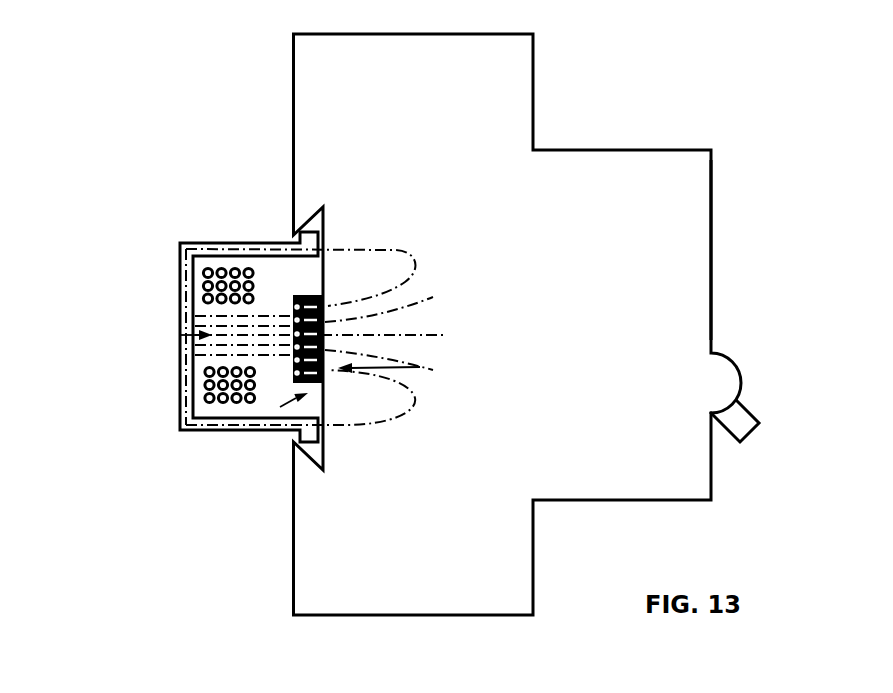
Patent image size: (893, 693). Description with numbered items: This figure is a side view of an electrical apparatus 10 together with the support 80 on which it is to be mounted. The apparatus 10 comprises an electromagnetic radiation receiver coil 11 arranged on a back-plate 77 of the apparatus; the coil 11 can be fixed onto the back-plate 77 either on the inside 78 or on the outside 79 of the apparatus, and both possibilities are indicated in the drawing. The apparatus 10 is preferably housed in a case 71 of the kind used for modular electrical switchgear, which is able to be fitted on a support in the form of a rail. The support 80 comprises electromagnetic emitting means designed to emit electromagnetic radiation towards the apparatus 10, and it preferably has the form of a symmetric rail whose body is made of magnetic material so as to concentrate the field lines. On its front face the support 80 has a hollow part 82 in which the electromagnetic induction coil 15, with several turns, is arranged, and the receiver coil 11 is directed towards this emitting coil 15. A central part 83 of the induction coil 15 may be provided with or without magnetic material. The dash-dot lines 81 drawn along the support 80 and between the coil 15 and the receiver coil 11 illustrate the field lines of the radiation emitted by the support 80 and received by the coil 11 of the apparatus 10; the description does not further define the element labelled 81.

The apparatus 10 is at (618, 180).
The case 71 is at (708, 237).
The support 80 is at (203, 250).
The field lines / lining 81 is at (183, 282).
The hollow part 82 is at (273, 283).
The central part 83 is at (180, 335).
The electromagnetic induction coil 15 is at (233, 300).
The electromagnetic radiation receiver coil 11 is at (309, 332).
The inside 78 is at (420, 367).
The back-plate 77 is at (320, 412).
The outside 79 is at (280, 407).